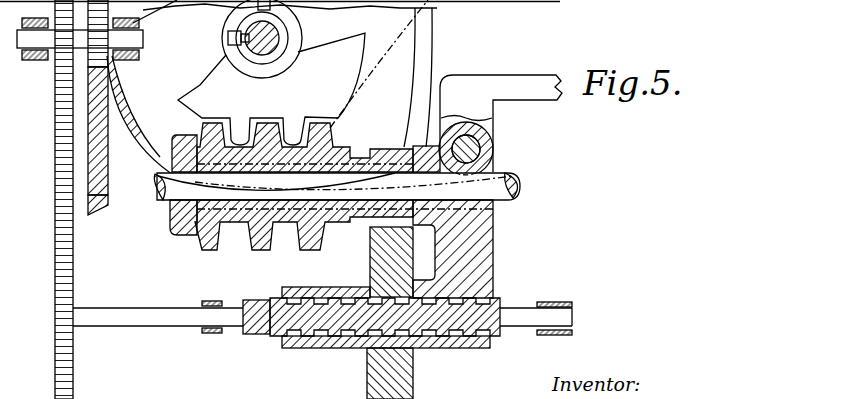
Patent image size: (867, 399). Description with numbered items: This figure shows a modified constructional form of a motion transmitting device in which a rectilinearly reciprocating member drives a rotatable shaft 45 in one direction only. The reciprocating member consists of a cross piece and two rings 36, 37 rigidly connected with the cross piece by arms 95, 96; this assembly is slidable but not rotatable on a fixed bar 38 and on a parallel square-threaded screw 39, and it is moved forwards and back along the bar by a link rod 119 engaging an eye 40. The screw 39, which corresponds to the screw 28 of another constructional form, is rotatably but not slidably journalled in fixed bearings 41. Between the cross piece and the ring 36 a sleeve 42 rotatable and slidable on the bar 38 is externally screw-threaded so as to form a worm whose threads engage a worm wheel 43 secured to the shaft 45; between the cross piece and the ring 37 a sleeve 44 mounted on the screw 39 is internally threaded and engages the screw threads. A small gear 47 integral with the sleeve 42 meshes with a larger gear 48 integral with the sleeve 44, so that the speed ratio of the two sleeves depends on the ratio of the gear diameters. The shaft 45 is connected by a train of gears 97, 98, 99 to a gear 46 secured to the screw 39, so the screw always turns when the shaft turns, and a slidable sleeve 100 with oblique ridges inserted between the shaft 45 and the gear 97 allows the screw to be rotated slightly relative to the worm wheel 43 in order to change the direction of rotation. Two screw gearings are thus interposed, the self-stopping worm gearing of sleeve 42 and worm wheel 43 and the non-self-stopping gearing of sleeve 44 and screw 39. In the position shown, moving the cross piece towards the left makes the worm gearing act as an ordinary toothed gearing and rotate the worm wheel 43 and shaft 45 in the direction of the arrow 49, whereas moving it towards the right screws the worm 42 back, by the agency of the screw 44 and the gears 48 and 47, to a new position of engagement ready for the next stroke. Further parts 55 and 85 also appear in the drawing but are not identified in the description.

The screw 28 is at (530, 0).
The ring 36 is at (173, 223).
The ring 37 is at (288, 340).
The fixed bar 38 is at (178, 180).
The square-threaded screw 39 is at (446, 322).
The eye 40 is at (492, 150).
The fixed bearings 41 is at (218, 299).
The sleeve 42 is at (312, 152).
The worm wheel 43 is at (357, 82).
The sleeve 44 is at (326, 340).
The shaft 45 is at (250, 29).
The gear 46 is at (76, 379).
The small gear 47 is at (337, 195).
The larger gear 48 is at (375, 384).
The arrow 49 is at (287, 58).
The bearing block 55 is at (478, 232).
The frame 85 is at (466, 0).
The arm 95 is at (247, 212).
The arm 96 is at (322, 287).
The gear 97 is at (128, 127).
The gear 98 is at (100, 226).
The gear 99 is at (58, 104).
The slidable sleeve 100 is at (228, 50).
The link rod 119 is at (543, 80).